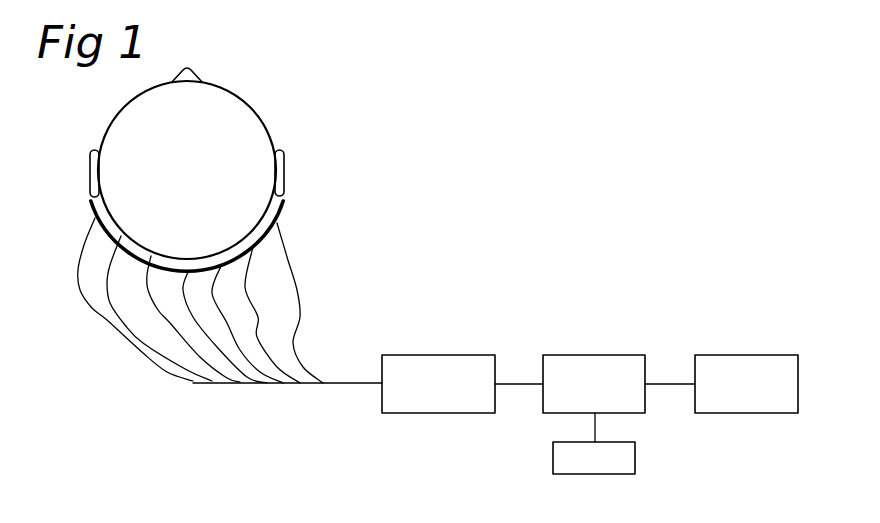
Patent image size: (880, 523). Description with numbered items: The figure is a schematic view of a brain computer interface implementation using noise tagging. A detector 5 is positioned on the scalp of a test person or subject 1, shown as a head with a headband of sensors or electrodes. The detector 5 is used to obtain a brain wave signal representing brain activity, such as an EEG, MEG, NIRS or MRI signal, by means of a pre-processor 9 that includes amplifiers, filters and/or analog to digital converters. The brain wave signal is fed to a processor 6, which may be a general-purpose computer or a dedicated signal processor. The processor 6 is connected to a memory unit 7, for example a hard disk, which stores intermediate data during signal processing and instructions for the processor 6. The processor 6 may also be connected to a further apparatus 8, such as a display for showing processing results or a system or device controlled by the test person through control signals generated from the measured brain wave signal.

The subject 1 is at (275, 105).
The detector 5 is at (283, 207).
The pre-processor 9 is at (407, 364).
The processor 6 is at (614, 366).
The memory unit 7 is at (628, 455).
The further apparatus 8 is at (770, 368).